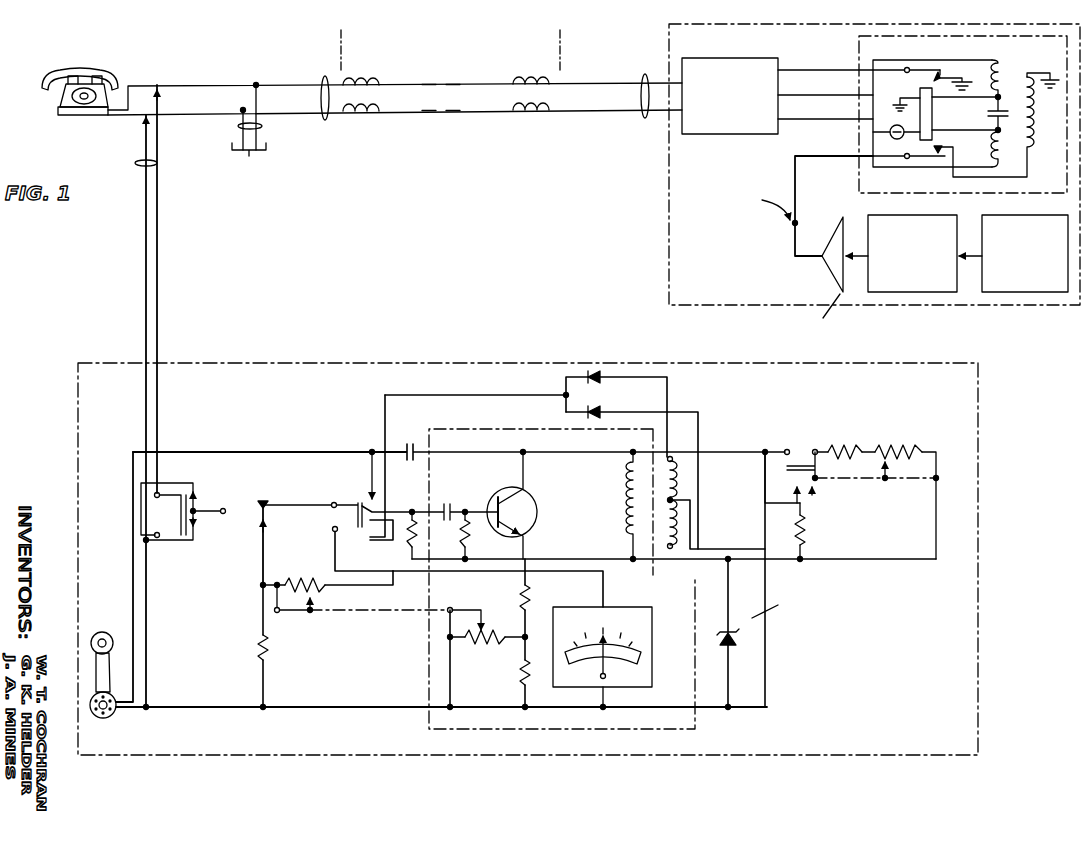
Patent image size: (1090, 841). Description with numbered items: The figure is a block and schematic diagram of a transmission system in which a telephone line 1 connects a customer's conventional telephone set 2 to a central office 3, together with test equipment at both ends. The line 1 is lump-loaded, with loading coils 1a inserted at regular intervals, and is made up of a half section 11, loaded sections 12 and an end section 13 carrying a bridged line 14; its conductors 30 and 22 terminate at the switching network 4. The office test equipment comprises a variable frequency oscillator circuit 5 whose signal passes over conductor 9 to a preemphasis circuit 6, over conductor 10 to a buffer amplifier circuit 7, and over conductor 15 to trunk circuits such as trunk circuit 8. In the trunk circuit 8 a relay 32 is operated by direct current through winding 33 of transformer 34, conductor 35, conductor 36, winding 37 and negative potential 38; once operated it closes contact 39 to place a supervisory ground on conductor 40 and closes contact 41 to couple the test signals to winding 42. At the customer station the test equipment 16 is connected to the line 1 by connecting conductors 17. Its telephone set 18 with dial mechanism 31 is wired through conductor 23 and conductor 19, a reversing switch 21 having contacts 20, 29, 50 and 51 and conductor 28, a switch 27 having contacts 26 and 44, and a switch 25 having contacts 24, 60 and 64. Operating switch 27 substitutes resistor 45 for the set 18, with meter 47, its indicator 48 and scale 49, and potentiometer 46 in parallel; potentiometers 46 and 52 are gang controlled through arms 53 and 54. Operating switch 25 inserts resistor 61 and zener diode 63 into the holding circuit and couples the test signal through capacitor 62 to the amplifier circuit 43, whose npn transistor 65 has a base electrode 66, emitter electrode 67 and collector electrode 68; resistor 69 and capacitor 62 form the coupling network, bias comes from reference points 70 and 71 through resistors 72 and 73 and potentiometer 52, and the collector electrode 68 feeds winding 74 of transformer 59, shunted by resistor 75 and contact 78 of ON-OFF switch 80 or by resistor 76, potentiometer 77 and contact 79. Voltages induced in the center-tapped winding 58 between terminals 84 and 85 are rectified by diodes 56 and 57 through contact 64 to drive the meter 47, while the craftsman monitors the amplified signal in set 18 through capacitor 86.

The telephone line 1 is at (323, 120).
The loading coils 1a is at (379, 90).
The telephone set 2 is at (80, 118).
The central office 3 is at (669, 229).
The switching network 4 is at (720, 134).
The variable frequency oscillator circuit 5 is at (1022, 292).
The preemphasis circuit 6 is at (912, 292).
The buffer amplifier circuit 7 is at (834, 238).
The trunk circuit 8 is at (859, 43).
The conductor 9 is at (972, 252).
The conductor 10 is at (864, 252).
The half section 11 is at (609, 46).
The loaded sections 12 is at (450, 49).
The end section 13 is at (251, 46).
The bridged line 14 is at (262, 126).
The conductor 15 is at (797, 180).
The test equipment 16 is at (316, 363).
The connecting conductors 17 is at (157, 163).
The telephone set 18 is at (103, 664).
The conductor 19 is at (194, 707).
The contact of switch 21 20 is at (196, 543).
The reversing switch 21 is at (269, 513).
The conductor of line 1 22 is at (120, 117).
The conductor 23 is at (147, 690).
The contact of switch 25 24 is at (378, 494).
The switch 25 is at (347, 504).
The contact of switch 27 26 is at (268, 508).
The switch 27 is at (246, 481).
The conductor 28 is at (212, 512).
The contact of switch 21 29 is at (200, 498).
The conductor of line 1 30 is at (144, 84).
The dial mechanism 31 is at (105, 718).
The relay 32 is at (918, 92).
The winding of transformer 34 33 is at (990, 98).
The transformer 34 is at (1006, 66).
The conductor 35 is at (803, 95).
The conductor 36 is at (808, 119).
The winding of transformer 34 37 is at (990, 153).
The negative potential 38 is at (878, 133).
The contact of relay 32 39 is at (945, 75).
The conductor 40 is at (803, 70).
The contact of relay 32 41 is at (938, 156).
The winding of transformer 34 42 is at (1035, 130).
The amplifier circuit 43 is at (483, 429).
The contact of switch 27 44 is at (268, 526).
The resistor 45 is at (270, 649).
The potentiometer 46 is at (325, 590).
The meter 47 is at (622, 688).
The indicator 48 is at (606, 662).
The scale 49 is at (608, 606).
The contact of switch 21 50 is at (194, 484).
The contact of switch 21 51 is at (200, 527).
The potentiometer 52 is at (487, 658).
The arm of potentiometer 46 53 is at (312, 612).
The arm of potentiometer 52 54 is at (462, 608).
The diode 56 is at (590, 380).
The diode 57 is at (590, 410).
The winding of transformer 59 58 is at (690, 520).
The transformer 59 is at (638, 464).
The contact of switch 25 60 is at (378, 506).
The resistor 61 is at (464, 572).
The capacitor 62 is at (447, 503).
The zener diode 63 is at (740, 635).
The contact of switch 25 64 is at (375, 543).
The npn transistor 65 is at (538, 513).
The base electrode 66 is at (496, 506).
The emitter electrode 67 is at (525, 545).
The collector electrode 68 is at (524, 482).
The resistor 69 is at (460, 546).
The reference point 70 is at (730, 562).
The reference point 71 is at (727, 705).
The resistor 72 is at (531, 596).
The resistor 73 is at (520, 676).
The winding of transformer 59 74 is at (626, 514).
The resistor 75 is at (808, 528).
The resistor 76 is at (843, 445).
The potentiometer 77 is at (895, 445).
The contact of switch 80 78 is at (792, 502).
The contact of switch 80 79 is at (814, 494).
The ON-OFF switch 80 is at (815, 450).
The terminal of winding 58 84 is at (674, 458).
The terminal of winding 58 85 is at (670, 549).
The capacitor 86 is at (408, 445).